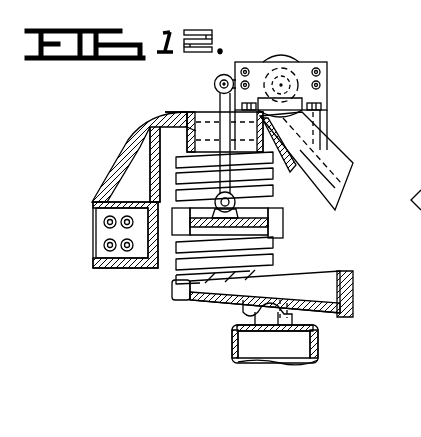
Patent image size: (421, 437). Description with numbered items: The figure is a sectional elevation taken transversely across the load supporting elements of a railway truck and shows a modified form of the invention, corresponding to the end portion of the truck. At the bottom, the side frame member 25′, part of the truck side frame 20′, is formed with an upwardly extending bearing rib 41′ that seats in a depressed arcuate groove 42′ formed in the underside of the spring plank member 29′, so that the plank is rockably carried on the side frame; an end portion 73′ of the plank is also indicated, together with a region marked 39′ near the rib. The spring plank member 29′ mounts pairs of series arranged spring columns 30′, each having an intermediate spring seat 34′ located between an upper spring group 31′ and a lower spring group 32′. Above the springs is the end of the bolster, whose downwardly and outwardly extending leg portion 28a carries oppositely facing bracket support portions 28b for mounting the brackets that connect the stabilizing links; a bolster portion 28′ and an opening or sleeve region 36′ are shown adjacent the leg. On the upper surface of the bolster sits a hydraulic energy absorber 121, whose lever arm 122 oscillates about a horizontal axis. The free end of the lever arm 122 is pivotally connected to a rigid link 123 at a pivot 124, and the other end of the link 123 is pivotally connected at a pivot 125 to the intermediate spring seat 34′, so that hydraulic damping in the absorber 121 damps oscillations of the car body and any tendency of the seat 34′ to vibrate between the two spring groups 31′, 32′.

The energy absorber 121 is at (287, 62).
The lever arm 122 is at (224, 74).
The rigid link 123 is at (217, 127).
The pivotal connection 124 is at (218, 54).
The pivotal connection 125 is at (181, 191).
The leg portion 28a is at (122, 142).
The bracket support portion 28b is at (98, 236).
The bracket 28′ is at (345, 147).
The sleeve 36′ is at (207, 113).
The upper spring group 31′ is at (318, 192).
The intermediate spring seat 34′ is at (285, 222).
The lower spring group 32′ is at (274, 248).
The spring column 30′ is at (175, 262).
The spring plank member 29′ is at (350, 313).
The end cap 73′ is at (353, 279).
The arcuate groove 42′ is at (299, 297).
The bearing rib 41′ is at (246, 318).
The clamp foot 39′ is at (206, 302).
The rail 20′ is at (231, 353).
The side frame member 25′ is at (318, 348).